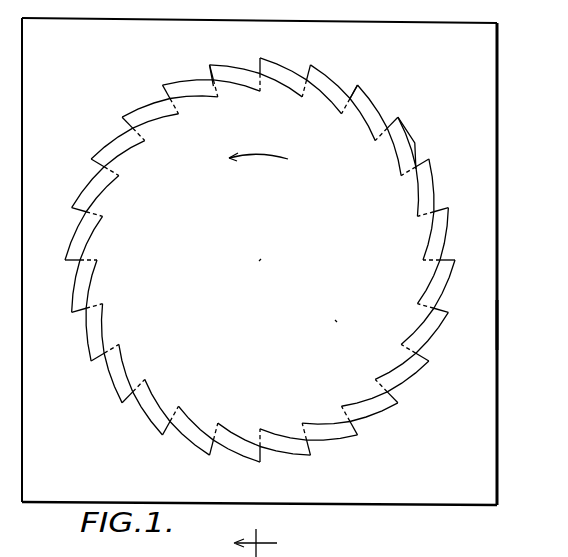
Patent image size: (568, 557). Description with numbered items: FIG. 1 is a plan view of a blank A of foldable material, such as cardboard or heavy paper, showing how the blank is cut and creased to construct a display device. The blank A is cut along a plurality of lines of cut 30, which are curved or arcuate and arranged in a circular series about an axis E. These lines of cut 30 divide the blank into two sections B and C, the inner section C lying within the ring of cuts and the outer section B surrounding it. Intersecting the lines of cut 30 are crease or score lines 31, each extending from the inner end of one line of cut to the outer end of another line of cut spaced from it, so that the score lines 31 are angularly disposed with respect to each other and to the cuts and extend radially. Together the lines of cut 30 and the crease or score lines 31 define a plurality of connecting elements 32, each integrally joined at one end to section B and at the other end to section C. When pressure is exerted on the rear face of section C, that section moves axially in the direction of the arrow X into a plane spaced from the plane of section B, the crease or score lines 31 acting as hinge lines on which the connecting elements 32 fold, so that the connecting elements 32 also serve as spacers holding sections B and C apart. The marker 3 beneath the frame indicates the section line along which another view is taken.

The lines of cut 30 is at (332, 78).
The crease or score lines 31 is at (210, 67).
The connecting elements 32 is at (402, 133).
The blank A is at (499, 81).
The section B is at (477, 327).
The section C is at (334, 323).
The axis E is at (260, 260).
The arrow X is at (258, 145).
The section line for FIG. 3 is at (262, 543).